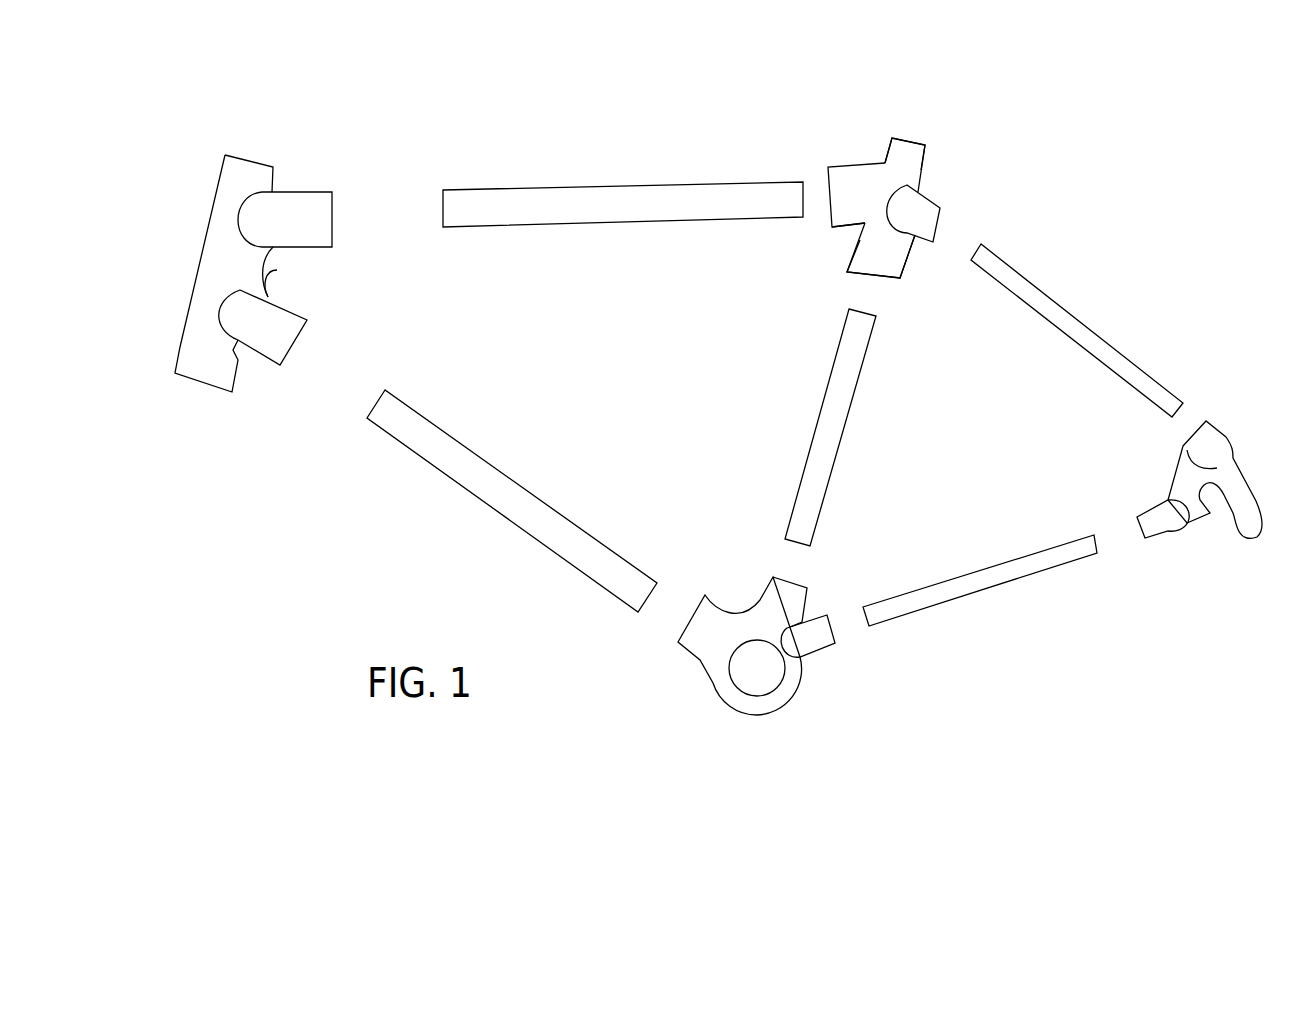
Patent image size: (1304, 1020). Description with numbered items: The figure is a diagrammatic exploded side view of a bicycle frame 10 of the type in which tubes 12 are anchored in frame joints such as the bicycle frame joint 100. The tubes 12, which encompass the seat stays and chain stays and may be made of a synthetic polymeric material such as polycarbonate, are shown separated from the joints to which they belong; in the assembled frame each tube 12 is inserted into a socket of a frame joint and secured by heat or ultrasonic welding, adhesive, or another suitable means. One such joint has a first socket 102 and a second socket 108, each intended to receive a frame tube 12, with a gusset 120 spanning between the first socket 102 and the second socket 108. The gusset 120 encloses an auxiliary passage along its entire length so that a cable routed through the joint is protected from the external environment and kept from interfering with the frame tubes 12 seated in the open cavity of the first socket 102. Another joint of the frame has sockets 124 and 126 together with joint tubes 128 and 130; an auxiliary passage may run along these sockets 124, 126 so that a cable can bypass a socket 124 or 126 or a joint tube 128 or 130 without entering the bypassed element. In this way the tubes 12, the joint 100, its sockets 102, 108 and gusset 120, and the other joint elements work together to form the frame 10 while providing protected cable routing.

The bicycle frame 10 is at (1154, 41).
The tube 12 is at (632, 185).
The bicycle frame joint 100 is at (718, 379).
The first socket 102 is at (313, 187).
The second socket 108 is at (303, 307).
The gusset 120 is at (277, 270).
The socket 124 is at (860, 163).
The socket 126 is at (938, 195).
The joint tube 128 is at (927, 163).
The joint tube 130 is at (847, 260).